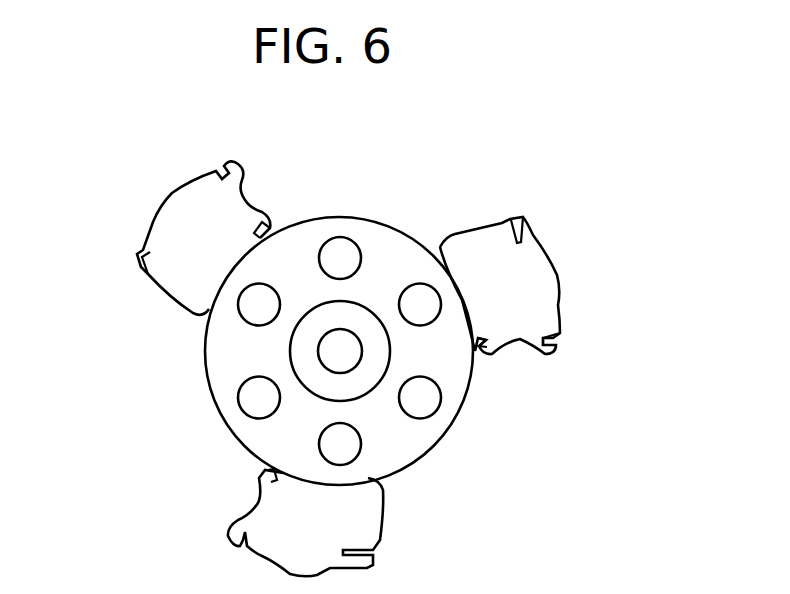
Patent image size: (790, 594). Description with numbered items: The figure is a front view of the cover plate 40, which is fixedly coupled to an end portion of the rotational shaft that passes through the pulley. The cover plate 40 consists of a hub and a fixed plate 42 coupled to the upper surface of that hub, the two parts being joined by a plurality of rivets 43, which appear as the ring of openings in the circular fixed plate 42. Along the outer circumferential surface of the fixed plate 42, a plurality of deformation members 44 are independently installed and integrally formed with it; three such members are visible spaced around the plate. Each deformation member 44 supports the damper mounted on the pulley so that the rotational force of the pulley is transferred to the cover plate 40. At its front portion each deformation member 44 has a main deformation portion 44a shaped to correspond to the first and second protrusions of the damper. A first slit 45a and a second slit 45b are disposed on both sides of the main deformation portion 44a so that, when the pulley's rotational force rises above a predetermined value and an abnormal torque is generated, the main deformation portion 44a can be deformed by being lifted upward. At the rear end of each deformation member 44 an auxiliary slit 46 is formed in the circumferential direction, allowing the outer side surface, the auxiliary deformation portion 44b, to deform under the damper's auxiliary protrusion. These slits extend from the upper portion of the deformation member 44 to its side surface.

The cover plate 40 is at (182, 425).
The fixed plate 42 is at (421, 446).
The rivets 43 is at (345, 248).
The deformation member 44 is at (183, 213).
The main deformation portion 44a is at (248, 205).
The auxiliary deformation portion 44b is at (150, 223).
The first slit 45a is at (556, 339).
The second slit 45b is at (477, 356).
The auxiliary slit 46 is at (508, 228).